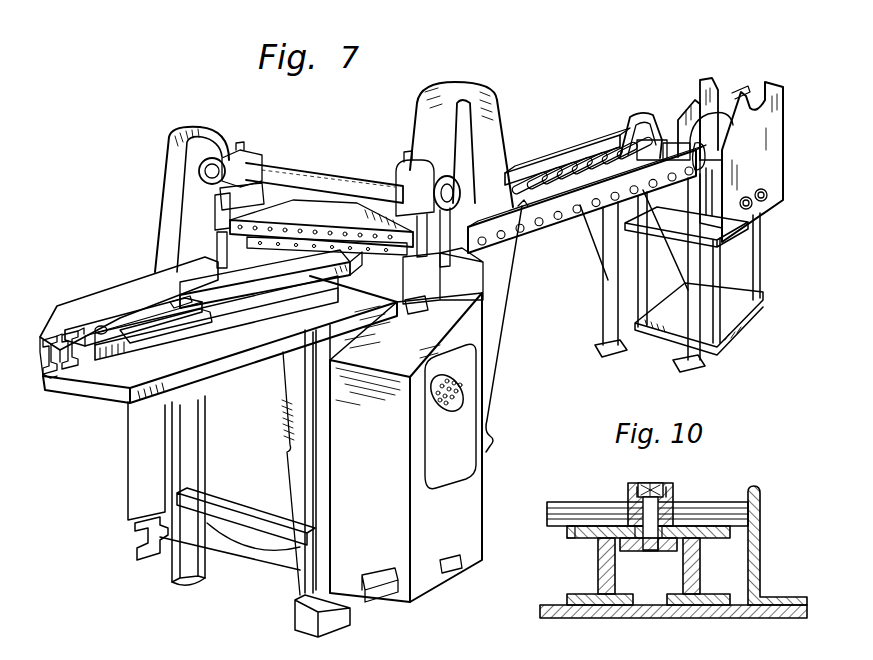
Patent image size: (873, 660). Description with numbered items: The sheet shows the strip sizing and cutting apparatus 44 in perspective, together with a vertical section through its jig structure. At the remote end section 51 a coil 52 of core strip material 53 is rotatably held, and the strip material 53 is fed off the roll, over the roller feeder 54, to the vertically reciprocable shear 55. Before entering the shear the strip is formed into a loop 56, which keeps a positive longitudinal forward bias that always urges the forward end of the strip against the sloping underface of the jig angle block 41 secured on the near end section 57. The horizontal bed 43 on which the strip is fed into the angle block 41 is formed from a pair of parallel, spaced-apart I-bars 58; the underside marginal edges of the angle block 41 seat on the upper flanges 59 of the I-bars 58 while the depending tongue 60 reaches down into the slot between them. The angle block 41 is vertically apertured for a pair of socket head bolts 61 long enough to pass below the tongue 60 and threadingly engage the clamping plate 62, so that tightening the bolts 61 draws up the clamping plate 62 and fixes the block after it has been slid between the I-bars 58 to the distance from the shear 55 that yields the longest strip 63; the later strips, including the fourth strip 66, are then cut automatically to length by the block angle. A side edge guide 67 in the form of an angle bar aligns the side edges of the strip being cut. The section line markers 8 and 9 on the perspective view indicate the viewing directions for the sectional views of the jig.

In FIG. 7, the section line 8- 8 is at (808, 113).
In FIG. 7, the section line 9- 9 is at (152, 312).
In FIG. 7, the angle block 41 is at (181, 307).
In FIG. 10, the angle block 41 is at (672, 491).
In FIG. 7, the horizontal bed 43 is at (203, 312).
In FIG. 7, the strip sizing and cutting apparatus 44 is at (382, 468).
In FIG. 7, the remote end section 51 is at (777, 168).
In FIG. 7, the coil 52 is at (708, 122).
In FIG. 7, the core strip material 53 is at (557, 190).
In FIG. 7, the roller feeder 54 is at (562, 222).
In FIG. 7, the vertically reciprocable shear 55 is at (303, 208).
In FIG. 7, the loop 56 is at (428, 110).
In FIG. 7, the near end section 57 is at (117, 385).
In FIG. 10, the near end section 57 is at (735, 614).
In FIG. 7, the I-bars 58 is at (70, 364).
In FIG. 10, the I-bars 58 is at (598, 565).
In FIG. 10, the upper flanges 59 is at (575, 538).
In FIG. 10, the depending tongue 60 is at (638, 551).
In FIG. 10, the socket head bolts 61 is at (650, 482).
In FIG. 10, the clamping plate 62 is at (661, 551).
In FIG. 10, the strip 63 is at (566, 525).
In FIG. 10, the fourth strip 66 is at (585, 505).
In FIG. 7, the side edge guide 67 is at (290, 289).
In FIG. 10, the side edge guide 67 is at (760, 535).